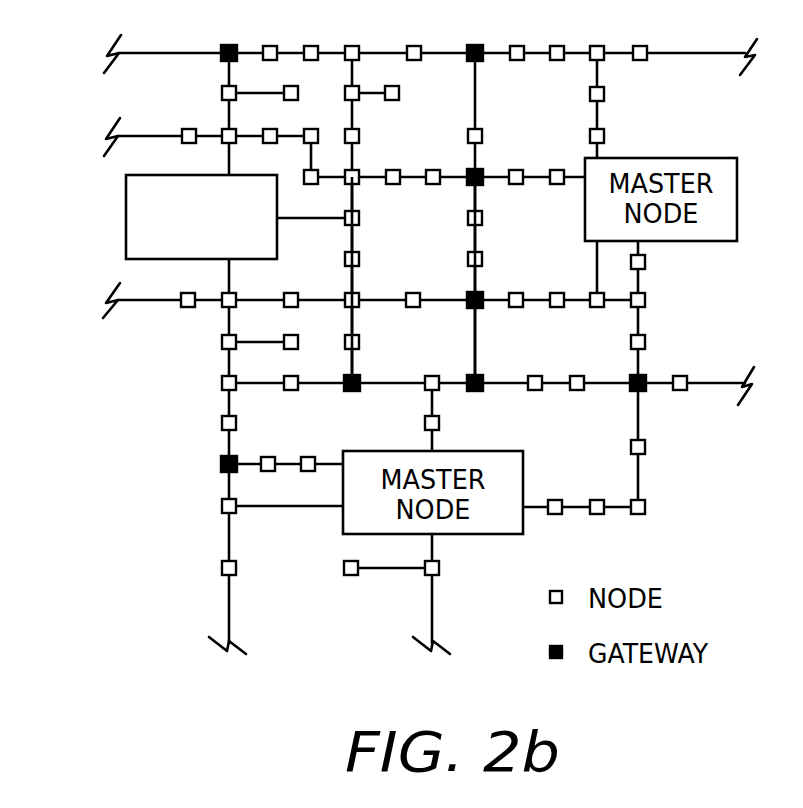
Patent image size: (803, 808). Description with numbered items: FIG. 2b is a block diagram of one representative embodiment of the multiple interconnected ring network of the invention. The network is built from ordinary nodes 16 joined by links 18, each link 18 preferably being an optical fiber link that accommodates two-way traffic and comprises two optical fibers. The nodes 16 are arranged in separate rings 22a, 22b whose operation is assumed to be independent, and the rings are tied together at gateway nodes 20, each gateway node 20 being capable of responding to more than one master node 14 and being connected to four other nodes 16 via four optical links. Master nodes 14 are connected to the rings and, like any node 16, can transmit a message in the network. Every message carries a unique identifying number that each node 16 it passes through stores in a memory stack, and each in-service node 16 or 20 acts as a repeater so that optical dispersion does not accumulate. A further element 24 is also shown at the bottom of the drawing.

The master node 14 is at (126, 203).
The node 16 is at (390, 168).
The link 18 is at (530, 181).
The gateway node 20 is at (482, 168).
The ring 22a is at (442, 246).
The ring 22b is at (443, 355).
The node 24 is at (372, 571).